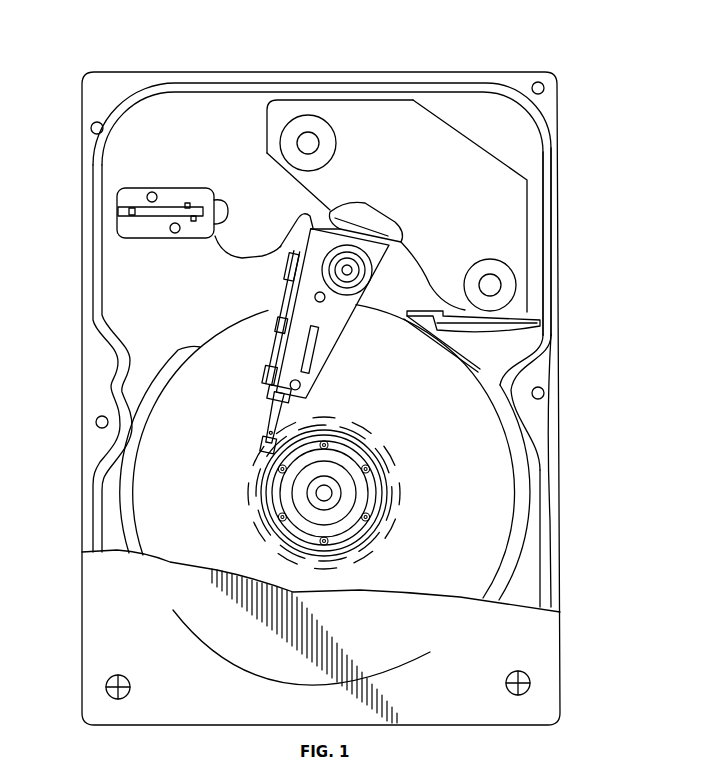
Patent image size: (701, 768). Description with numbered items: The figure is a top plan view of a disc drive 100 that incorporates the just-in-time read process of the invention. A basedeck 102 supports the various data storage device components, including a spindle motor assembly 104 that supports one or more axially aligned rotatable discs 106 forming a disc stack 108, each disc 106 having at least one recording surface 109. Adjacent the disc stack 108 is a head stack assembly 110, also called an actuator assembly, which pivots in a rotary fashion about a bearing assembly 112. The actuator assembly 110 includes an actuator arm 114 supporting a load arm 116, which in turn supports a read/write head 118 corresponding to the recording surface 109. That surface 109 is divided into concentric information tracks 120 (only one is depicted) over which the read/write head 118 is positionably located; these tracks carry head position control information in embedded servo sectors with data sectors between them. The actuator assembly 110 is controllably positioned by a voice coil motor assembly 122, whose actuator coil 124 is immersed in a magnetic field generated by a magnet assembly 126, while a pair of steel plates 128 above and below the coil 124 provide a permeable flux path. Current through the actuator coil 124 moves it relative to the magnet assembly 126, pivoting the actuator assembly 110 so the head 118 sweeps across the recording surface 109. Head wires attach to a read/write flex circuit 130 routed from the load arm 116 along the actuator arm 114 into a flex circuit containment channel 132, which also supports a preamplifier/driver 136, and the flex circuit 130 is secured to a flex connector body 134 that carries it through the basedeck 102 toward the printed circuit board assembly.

The disc drive 100 is at (258, 45).
The basedeck 102 is at (210, 125).
The spindle motor assembly 104 is at (355, 443).
The rotatable disc 106 is at (515, 482).
The disc stack 108 is at (525, 510).
The recording surface 109 is at (450, 413).
The head stack assembly 110 is at (356, 352).
The bearing assembly 112 is at (387, 250).
The actuator arm 114 is at (305, 378).
The load arm 116 is at (266, 424).
The read/write head 118 is at (263, 442).
The information track 120 is at (388, 540).
The voice coil motor assembly 122 is at (534, 160).
The actuator coil 124 is at (347, 215).
The magnet assembly 126 is at (358, 108).
The steel plate 128 is at (508, 234).
The read/write flex circuit 130 is at (213, 253).
The flex circuit containment channel 132 is at (285, 332).
The flex connector body 134 is at (127, 231).
The preamplifier/driver 136 is at (290, 270).